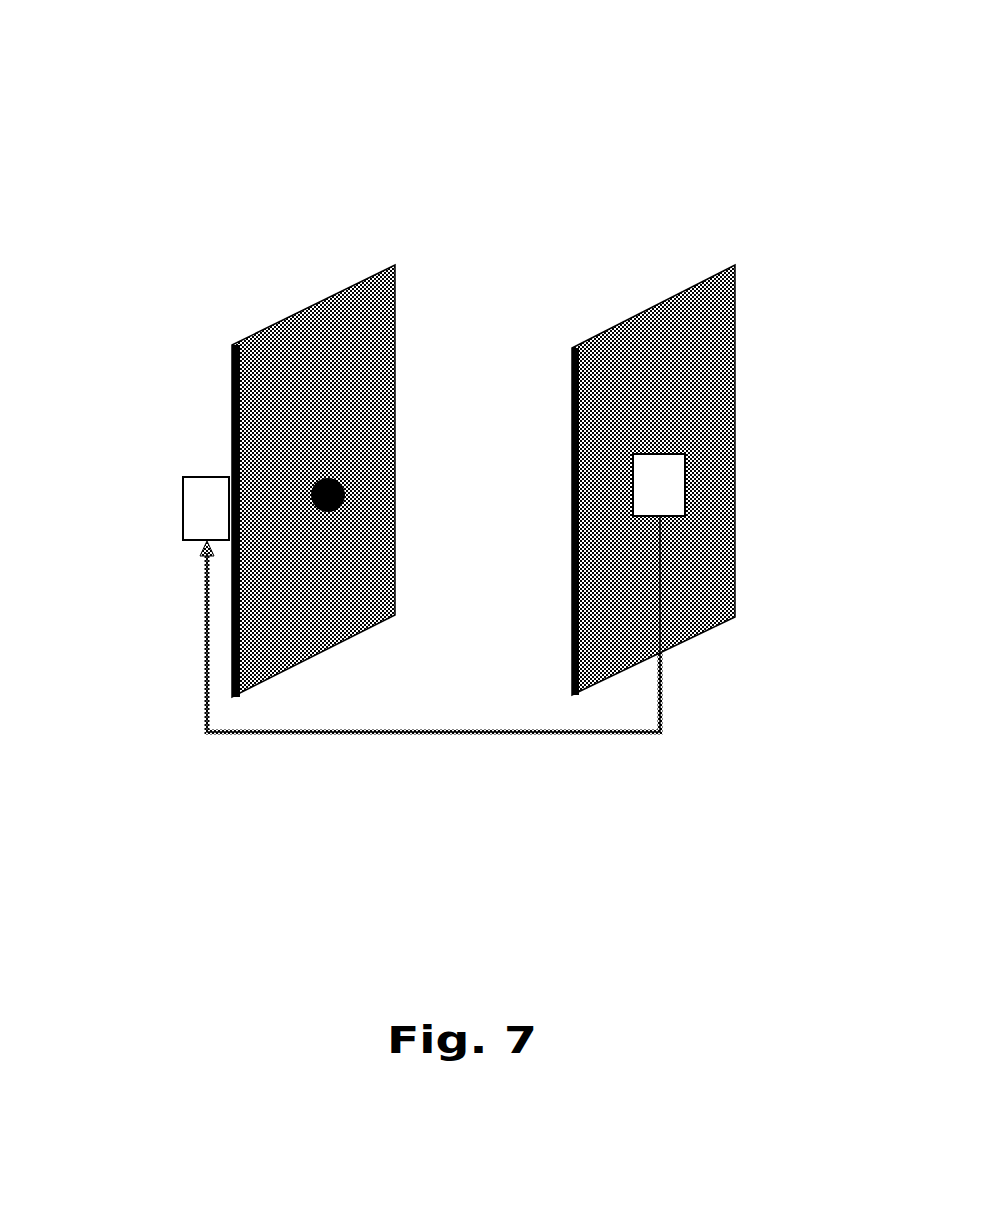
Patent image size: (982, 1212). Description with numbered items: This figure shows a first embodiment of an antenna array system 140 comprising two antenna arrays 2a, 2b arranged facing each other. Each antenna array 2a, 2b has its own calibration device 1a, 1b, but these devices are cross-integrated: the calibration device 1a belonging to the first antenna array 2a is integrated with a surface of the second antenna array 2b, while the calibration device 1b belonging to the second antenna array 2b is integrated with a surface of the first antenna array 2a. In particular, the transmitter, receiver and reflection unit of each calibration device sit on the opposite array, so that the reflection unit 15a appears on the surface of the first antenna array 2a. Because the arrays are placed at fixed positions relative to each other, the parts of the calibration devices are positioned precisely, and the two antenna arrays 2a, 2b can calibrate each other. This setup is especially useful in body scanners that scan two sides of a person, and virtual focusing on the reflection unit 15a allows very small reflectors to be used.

The antenna array system 140 is at (498, 100).
The first antenna array 2a is at (311, 228).
The second antenna array 2b is at (663, 228).
The calibration device 1a is at (722, 441).
The calibration device 1b is at (154, 461).
The reflection unit 15a is at (361, 516).